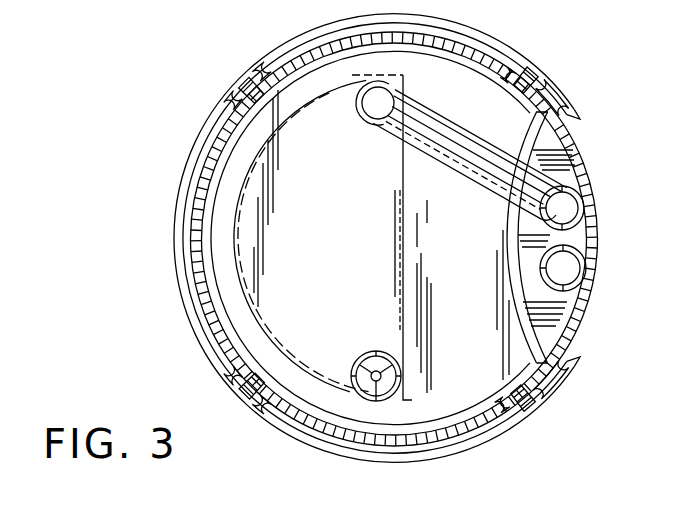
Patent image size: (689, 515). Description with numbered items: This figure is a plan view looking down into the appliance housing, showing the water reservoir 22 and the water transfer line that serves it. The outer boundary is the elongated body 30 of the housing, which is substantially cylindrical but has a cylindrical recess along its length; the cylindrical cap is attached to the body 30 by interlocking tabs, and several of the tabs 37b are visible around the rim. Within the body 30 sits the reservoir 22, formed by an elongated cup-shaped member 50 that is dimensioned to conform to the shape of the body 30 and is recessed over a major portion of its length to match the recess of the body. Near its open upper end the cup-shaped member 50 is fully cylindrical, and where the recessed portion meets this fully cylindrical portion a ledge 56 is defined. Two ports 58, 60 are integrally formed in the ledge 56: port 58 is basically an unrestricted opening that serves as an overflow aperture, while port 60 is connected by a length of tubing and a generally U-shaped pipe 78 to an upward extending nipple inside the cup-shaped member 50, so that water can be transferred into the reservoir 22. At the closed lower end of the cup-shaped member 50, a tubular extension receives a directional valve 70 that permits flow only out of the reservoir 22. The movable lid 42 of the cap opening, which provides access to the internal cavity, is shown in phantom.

The elongated body 30 is at (303, 36).
The interlocking tab 37b is at (238, 81).
The cup-shaped member 50 is at (200, 226).
The movable lid 42 is at (232, 300).
The reservoir 22 is at (474, 279).
The U-shaped pipe 78 is at (466, 153).
The port 60 is at (558, 206).
The port 58 is at (567, 268).
The ledge 56 is at (547, 333).
The directional valve 70 is at (370, 353).